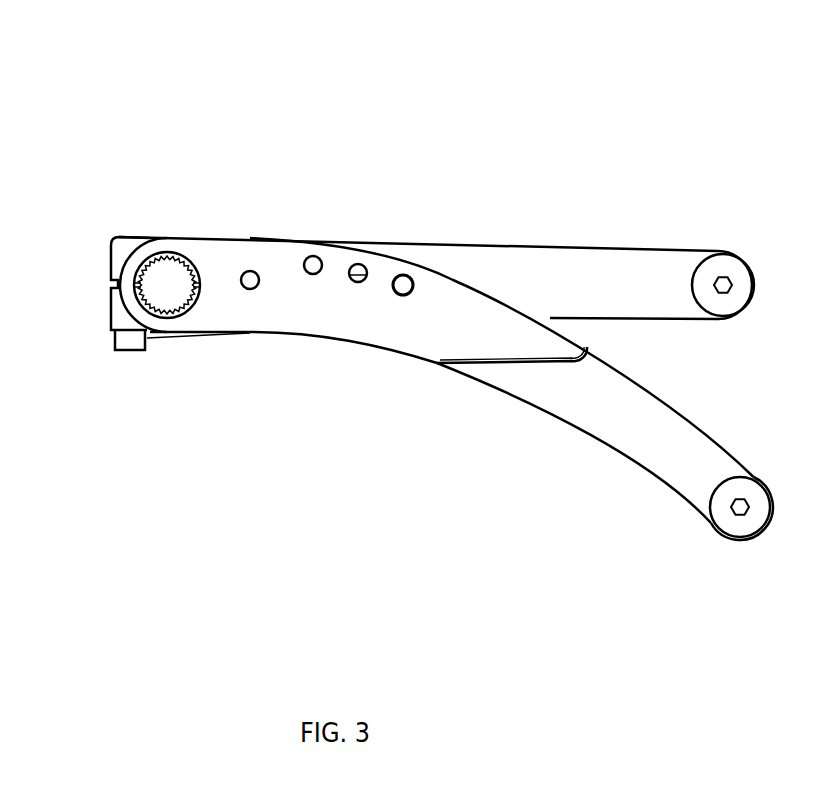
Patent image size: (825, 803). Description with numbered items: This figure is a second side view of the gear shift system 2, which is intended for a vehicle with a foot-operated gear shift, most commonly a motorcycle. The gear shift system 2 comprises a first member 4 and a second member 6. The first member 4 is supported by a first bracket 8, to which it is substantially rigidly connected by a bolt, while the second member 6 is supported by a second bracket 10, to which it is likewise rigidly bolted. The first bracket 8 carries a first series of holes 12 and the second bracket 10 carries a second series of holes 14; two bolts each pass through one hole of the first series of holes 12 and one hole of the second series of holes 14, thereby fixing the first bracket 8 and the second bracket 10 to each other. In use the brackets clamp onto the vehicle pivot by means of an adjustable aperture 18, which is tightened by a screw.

The gear shift system 2 is at (238, 128).
The first member 4 is at (738, 545).
The second member 6 is at (710, 252).
The first bracket 8 is at (412, 349).
The second bracket 10 is at (460, 258).
The first series of holes 12 is at (311, 256).
The second series of holes 14 is at (402, 272).
The adjustable aperture 18 is at (160, 278).